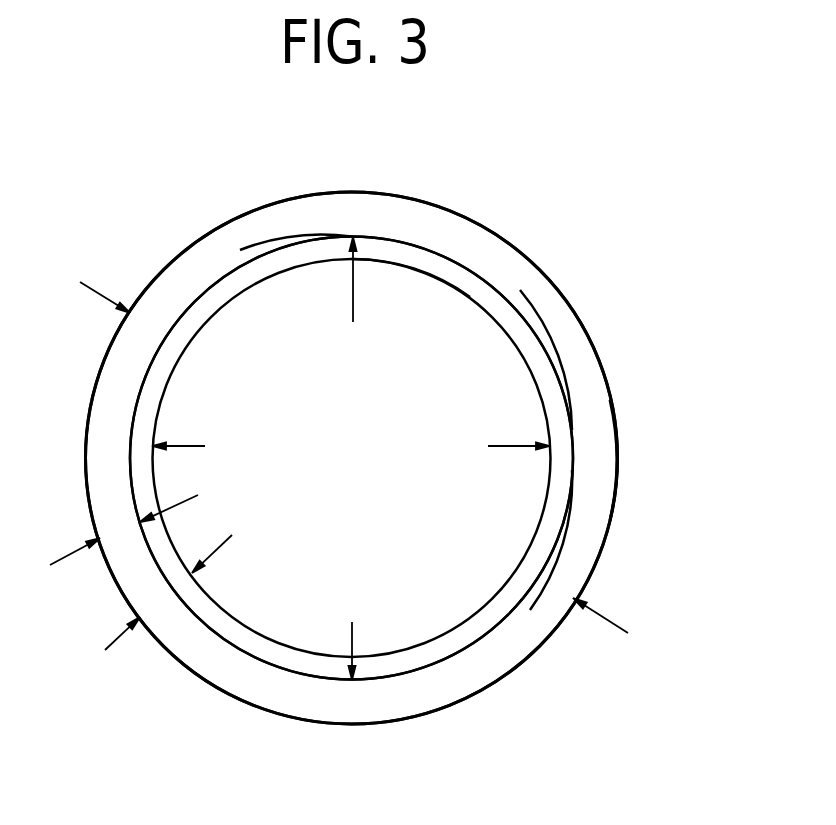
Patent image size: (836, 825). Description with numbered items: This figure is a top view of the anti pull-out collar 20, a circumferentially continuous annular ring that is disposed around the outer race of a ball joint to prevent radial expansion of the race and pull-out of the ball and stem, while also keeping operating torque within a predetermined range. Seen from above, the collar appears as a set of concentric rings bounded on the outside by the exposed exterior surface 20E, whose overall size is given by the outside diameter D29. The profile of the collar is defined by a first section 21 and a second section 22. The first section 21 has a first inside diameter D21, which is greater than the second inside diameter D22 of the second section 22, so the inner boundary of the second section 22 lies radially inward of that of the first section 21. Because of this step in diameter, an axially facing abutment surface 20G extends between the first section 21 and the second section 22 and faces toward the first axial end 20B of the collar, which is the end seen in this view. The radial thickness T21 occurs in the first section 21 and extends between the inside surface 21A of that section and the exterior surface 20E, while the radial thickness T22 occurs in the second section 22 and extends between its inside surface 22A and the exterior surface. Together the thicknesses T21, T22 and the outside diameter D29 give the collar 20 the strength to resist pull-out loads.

The anti pull-out collar 20 is at (614, 203).
The first section 21 is at (500, 623).
The second section 22 is at (415, 648).
The inside surface of the first section 21A is at (310, 242).
The inside surface of the second section 22A is at (457, 290).
The first axial end 20B is at (567, 339).
The exterior surface 20E is at (617, 416).
The abutment surface 20G is at (565, 488).
The first inside diameter D21 is at (353, 307).
The second inside diameter D22 is at (508, 447).
The radial thickness of the first section T21 is at (185, 505).
The radial thickness of the second section T22 is at (220, 550).
The outside diameter D29 is at (608, 622).